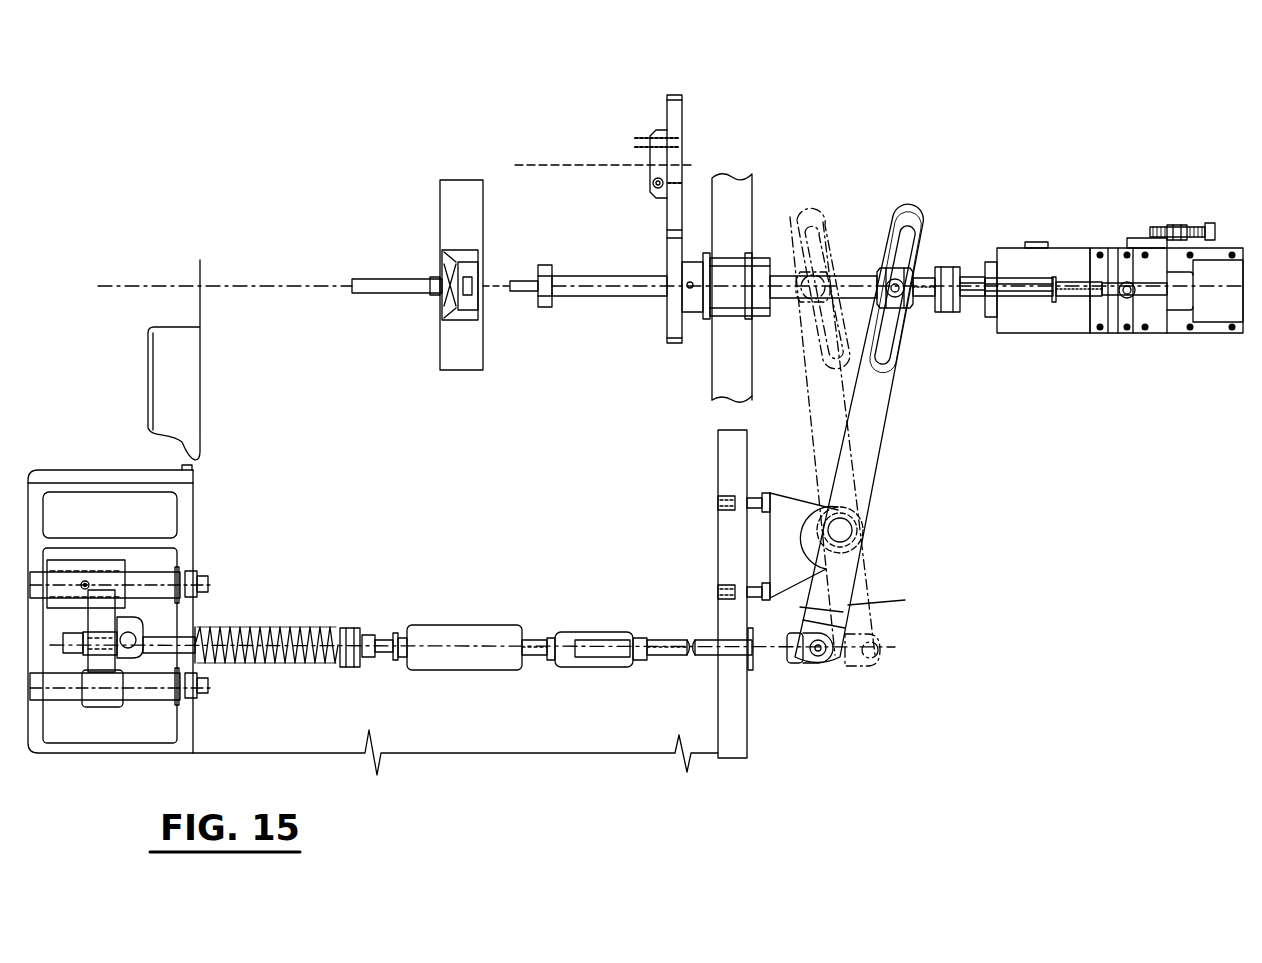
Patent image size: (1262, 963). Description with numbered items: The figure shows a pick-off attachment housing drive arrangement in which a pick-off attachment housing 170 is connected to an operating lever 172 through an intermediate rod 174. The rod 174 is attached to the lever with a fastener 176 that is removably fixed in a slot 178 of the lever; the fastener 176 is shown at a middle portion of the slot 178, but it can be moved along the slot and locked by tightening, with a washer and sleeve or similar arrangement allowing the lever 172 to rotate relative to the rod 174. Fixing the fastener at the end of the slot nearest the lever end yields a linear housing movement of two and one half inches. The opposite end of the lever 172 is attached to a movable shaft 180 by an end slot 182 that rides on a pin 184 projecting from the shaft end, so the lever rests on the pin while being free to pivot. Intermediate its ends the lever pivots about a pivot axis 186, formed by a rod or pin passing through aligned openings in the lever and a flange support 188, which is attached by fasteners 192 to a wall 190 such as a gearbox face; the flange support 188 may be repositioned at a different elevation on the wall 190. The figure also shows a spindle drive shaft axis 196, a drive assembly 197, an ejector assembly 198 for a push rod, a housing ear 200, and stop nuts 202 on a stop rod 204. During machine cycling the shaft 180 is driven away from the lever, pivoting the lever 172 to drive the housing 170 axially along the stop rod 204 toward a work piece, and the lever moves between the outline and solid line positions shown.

The pick-off attachment housing 170 is at (1071, 248).
The operating lever 172 is at (880, 423).
The intermediate rod 174 is at (1076, 298).
The fastener 176 is at (873, 270).
The slot 178 is at (913, 230).
The movable shaft 180 is at (537, 655).
The end slot 182 is at (807, 673).
The pin 184 is at (830, 638).
The pivot axis 186 is at (857, 530).
The flange support 188 is at (796, 535).
The wall 190 is at (748, 715).
The fasteners 192 is at (757, 582).
The spindle drive shaft axis 196 is at (537, 165).
The drive assembly 197 is at (667, 320).
The ejector assembly 198 is at (547, 262).
The housing ear 200 is at (1183, 227).
The stop nuts 202 is at (1220, 231).
The stop rod 204 is at (1157, 232).